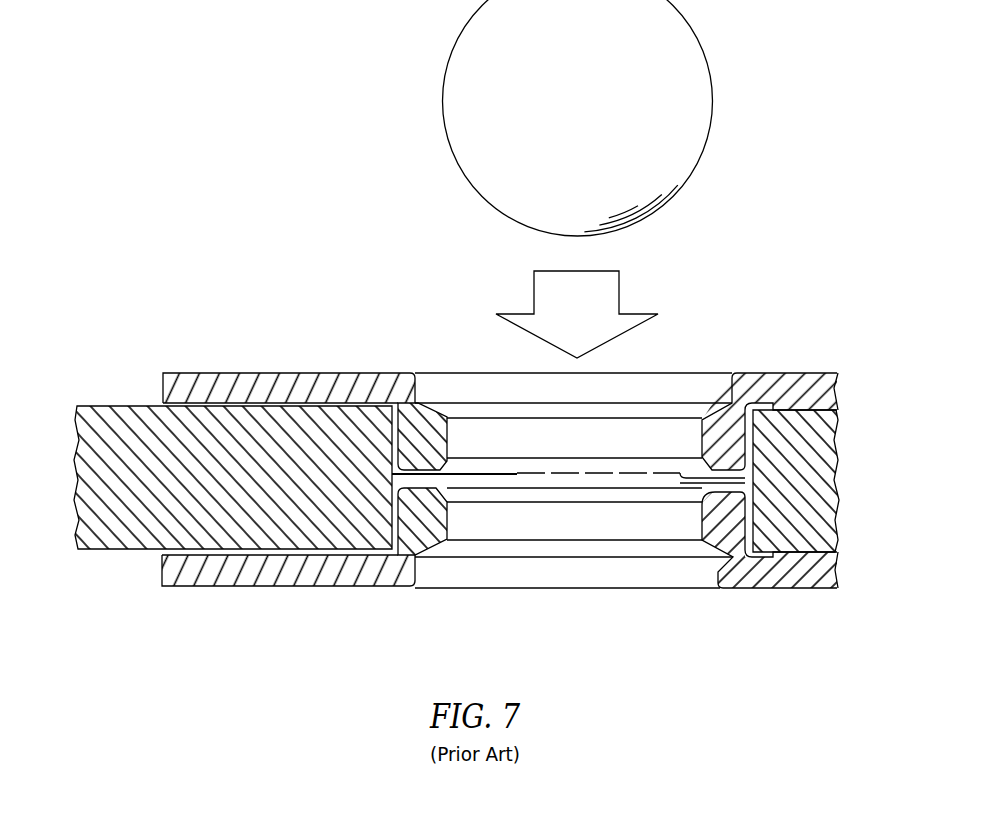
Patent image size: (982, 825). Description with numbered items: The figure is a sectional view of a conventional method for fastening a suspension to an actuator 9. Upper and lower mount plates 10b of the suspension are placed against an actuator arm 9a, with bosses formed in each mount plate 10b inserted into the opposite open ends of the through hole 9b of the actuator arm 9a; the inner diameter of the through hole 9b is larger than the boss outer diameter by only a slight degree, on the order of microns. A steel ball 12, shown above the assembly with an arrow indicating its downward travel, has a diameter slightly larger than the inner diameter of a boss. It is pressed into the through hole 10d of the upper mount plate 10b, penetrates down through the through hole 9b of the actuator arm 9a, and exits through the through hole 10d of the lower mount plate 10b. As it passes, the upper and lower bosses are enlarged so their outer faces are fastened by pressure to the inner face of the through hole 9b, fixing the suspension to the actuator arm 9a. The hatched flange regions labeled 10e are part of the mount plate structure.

The steel ball 12 is at (579, 96).
The actuator 9 is at (78, 459).
The actuator arm 9a is at (834, 487).
The through hole 9b is at (700, 478).
The mount plate 10b is at (268, 373).
The through hole 10d is at (726, 374).
The housing flange 10e is at (446, 440).